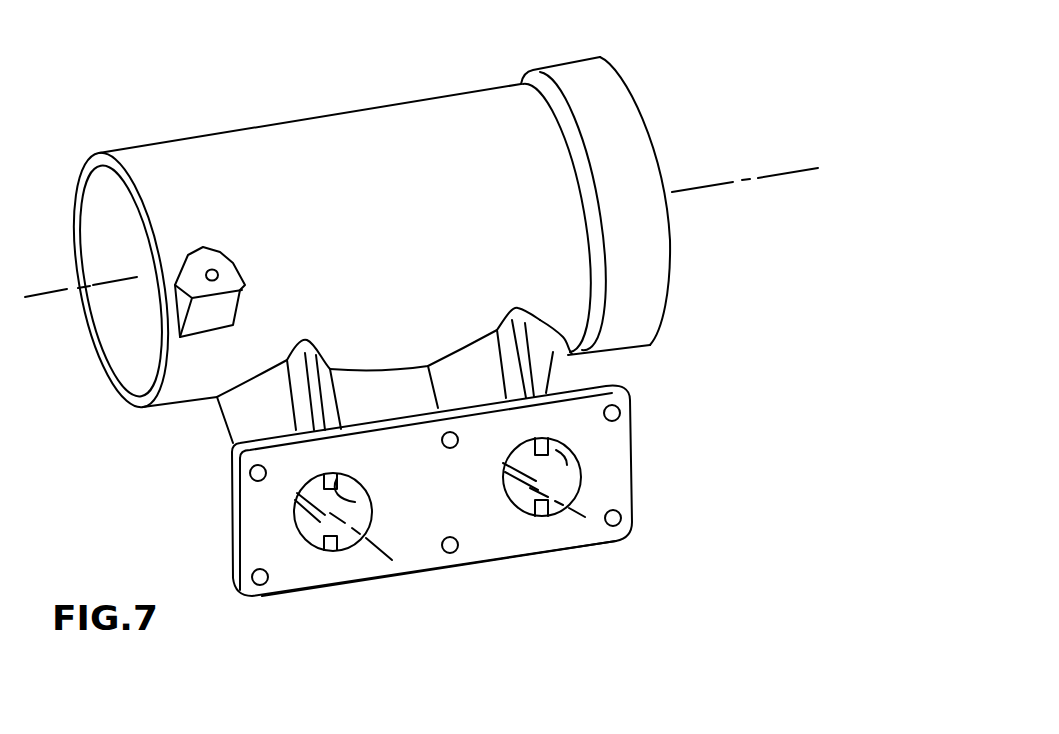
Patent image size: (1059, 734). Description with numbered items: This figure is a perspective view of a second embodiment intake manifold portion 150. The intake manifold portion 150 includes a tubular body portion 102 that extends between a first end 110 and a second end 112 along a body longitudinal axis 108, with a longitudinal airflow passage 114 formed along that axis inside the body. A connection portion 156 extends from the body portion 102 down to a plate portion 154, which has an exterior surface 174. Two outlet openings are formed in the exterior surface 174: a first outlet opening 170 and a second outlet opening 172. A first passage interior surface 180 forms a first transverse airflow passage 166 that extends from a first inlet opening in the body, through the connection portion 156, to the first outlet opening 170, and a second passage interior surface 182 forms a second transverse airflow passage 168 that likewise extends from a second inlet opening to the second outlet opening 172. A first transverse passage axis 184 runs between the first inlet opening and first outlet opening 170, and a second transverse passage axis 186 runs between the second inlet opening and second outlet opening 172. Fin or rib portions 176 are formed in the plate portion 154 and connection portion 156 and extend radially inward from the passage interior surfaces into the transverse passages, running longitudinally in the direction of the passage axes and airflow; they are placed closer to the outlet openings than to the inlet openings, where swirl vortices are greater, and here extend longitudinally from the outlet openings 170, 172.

The intake manifold portion 150 is at (677, 46).
The body portion 102 is at (316, 108).
The second end 112 is at (100, 152).
The longitudinal airflow passage 114 is at (108, 225).
The body longitudinal axis 108 is at (777, 175).
The first end 110 is at (623, 115).
The connection portion 156 is at (253, 414).
The fin or rib portion 176 is at (328, 482).
The plate portion 154 is at (633, 453).
The exterior surface 174 is at (470, 550).
The second outlet opening 172 is at (293, 517).
The first outlet opening 170 is at (583, 477).
The second passage interior surface 182 is at (337, 478).
The first passage interior surface 180 is at (550, 448).
The first transverse airflow passage 166 is at (567, 487).
The first transverse passage axis 184 is at (534, 497).
The second transverse airflow passage 168 is at (352, 549).
The second transverse passage axis 186 is at (330, 535).